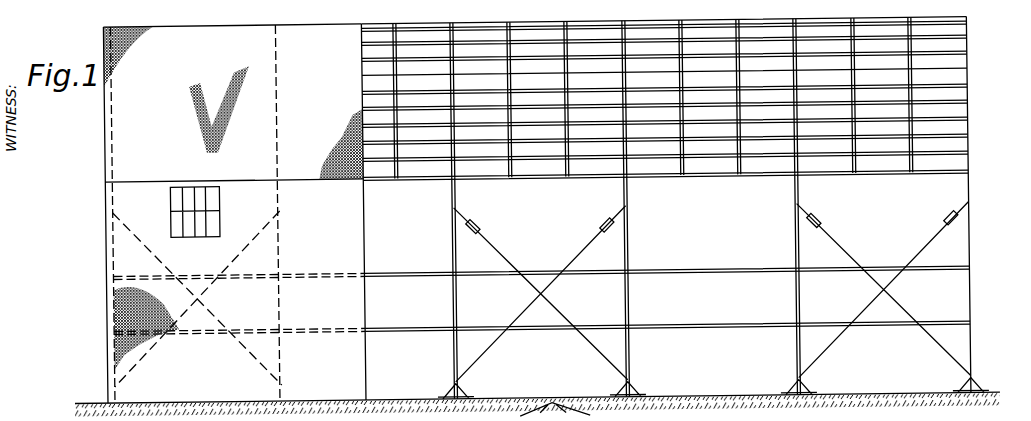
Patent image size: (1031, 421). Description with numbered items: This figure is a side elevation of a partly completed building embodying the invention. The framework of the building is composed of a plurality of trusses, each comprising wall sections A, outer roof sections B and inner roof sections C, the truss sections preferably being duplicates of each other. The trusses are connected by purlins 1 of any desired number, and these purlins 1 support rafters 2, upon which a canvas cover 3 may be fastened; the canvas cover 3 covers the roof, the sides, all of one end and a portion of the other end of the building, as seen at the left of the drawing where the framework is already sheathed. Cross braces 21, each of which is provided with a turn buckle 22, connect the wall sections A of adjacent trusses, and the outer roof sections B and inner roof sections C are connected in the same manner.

The purlins 1 is at (432, 160).
The rafters 2 is at (398, 100).
The canvas cover 3 is at (126, 118).
The cross braces 21 is at (574, 262).
The turn buckle 22 is at (478, 226).
The wall sections A is at (795, 245).
The outer roof sections B is at (968, 128).
The inner roof sections C is at (965, 41).